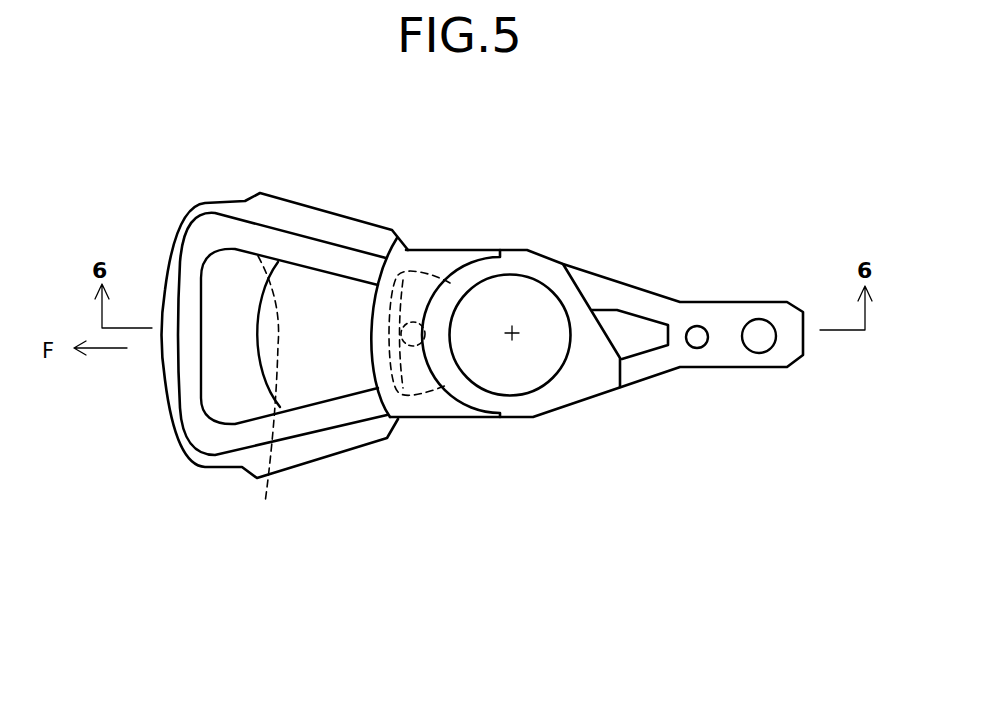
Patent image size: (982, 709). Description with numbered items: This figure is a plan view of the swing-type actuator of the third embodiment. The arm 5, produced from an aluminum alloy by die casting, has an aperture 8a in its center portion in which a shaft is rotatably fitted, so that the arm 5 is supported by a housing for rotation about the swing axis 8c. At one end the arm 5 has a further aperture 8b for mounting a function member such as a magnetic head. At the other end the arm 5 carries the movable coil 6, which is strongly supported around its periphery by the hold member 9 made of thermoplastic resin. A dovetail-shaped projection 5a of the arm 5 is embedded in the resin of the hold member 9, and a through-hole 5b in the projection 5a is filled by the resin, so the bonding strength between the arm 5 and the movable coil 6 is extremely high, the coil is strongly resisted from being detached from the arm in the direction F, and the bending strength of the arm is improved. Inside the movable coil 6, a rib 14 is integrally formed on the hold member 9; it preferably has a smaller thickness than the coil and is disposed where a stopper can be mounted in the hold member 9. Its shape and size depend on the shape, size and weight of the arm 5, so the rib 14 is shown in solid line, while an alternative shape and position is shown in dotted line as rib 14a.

The arm 5 is at (658, 305).
The dovetail-shaped projection 5a is at (420, 287).
The through-hole 5b is at (412, 346).
The movable coil 6 is at (207, 232).
The aperture 8a is at (508, 348).
The aperture 8b is at (757, 345).
The swing axis 8c is at (513, 333).
The hold member 9 is at (195, 452).
The rib 14 is at (308, 383).
The rib 14a is at (262, 394).